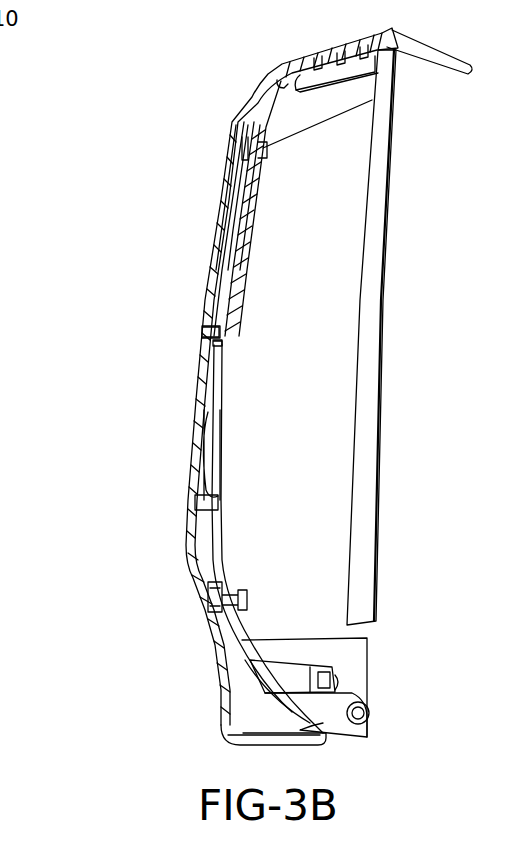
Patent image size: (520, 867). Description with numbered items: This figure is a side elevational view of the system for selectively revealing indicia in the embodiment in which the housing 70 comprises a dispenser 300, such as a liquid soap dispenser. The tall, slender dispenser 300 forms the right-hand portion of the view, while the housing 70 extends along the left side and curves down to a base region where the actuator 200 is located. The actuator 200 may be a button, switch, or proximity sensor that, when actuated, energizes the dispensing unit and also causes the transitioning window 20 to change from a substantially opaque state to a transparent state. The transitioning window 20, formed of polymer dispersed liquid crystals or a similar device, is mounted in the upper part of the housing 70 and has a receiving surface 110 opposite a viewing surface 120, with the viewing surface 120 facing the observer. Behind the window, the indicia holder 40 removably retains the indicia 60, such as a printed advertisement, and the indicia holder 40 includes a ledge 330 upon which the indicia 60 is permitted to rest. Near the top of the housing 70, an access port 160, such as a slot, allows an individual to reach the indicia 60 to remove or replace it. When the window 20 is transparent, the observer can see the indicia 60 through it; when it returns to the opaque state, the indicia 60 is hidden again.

The transitioning window 20 is at (200, 300).
The indicia holder 40 is at (222, 333).
The indicia 60 is at (230, 236).
The housing 70 is at (187, 548).
The receiving surface 110 is at (228, 205).
The viewing surface 120 is at (216, 246).
The access port 160 is at (245, 115).
The actuator 200 is at (222, 740).
The dispenser 300 is at (388, 270).
The ledge 330 is at (218, 343).